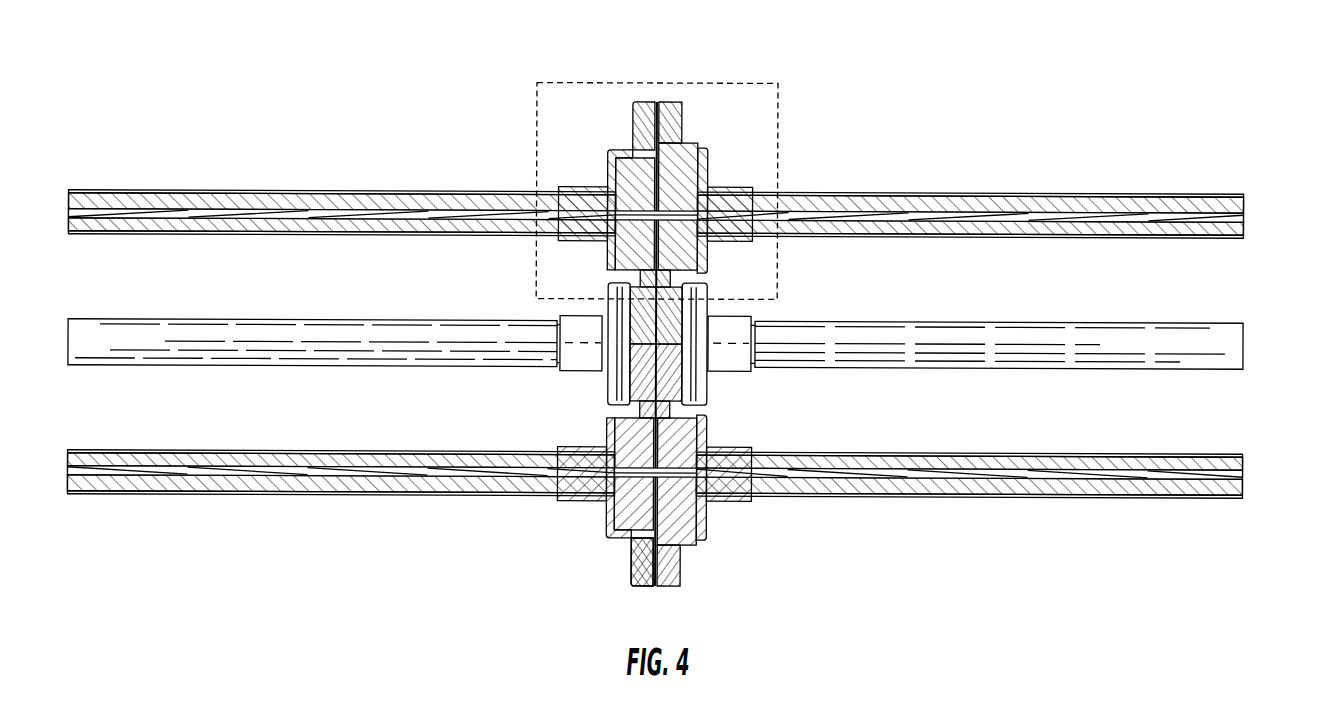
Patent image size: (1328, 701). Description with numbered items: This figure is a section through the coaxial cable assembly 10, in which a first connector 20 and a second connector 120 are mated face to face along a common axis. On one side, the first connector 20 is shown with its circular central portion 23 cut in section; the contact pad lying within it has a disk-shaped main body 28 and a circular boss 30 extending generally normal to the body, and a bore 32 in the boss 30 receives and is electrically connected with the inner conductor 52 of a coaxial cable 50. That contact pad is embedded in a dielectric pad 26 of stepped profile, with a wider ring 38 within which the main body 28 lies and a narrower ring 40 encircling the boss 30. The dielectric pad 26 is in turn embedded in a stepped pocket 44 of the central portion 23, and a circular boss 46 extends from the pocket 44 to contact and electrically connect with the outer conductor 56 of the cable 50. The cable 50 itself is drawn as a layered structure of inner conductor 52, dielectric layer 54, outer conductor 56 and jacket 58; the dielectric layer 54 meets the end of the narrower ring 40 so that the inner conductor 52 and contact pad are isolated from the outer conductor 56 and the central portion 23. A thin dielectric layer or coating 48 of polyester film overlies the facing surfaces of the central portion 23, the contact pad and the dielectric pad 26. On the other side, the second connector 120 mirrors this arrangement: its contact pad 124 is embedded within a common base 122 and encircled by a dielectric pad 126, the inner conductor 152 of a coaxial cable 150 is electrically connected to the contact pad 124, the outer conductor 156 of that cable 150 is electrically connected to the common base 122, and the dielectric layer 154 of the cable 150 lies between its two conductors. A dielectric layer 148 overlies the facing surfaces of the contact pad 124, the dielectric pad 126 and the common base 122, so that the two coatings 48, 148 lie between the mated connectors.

The coaxial cable assembly 10 is at (688, 341).
The first connector 20 is at (681, 340).
The circular central portion 23 is at (665, 152).
The dielectric pad 26 is at (681, 167).
The disk-shaped main body 28 is at (694, 184).
The circular boss 30 is at (678, 206).
The bore 32 is at (702, 224).
The wider ring 38 is at (673, 162).
The narrower ring 40 is at (678, 196).
The stepped pocket 44 is at (702, 267).
The circular boss 46 is at (748, 188).
The dielectric layer 48 is at (667, 120).
The coaxial cable 50 is at (688, 355).
The inner conductor 52 is at (1242, 218).
The dielectric layer 54 is at (1232, 208).
The outer conductor 56 is at (1206, 193).
The jacket 58 is at (1212, 378).
The second connector 120 is at (586, 145).
The common base 122 is at (656, 85).
The contact pad 124 is at (622, 196).
The dielectric pad 126 is at (610, 152).
The dielectric layer 148 is at (647, 556).
The coaxial cable 150 is at (342, 149).
The inner conductor 152 is at (372, 214).
The insulation 154 is at (287, 192).
The outer conductor 156 is at (226, 190).